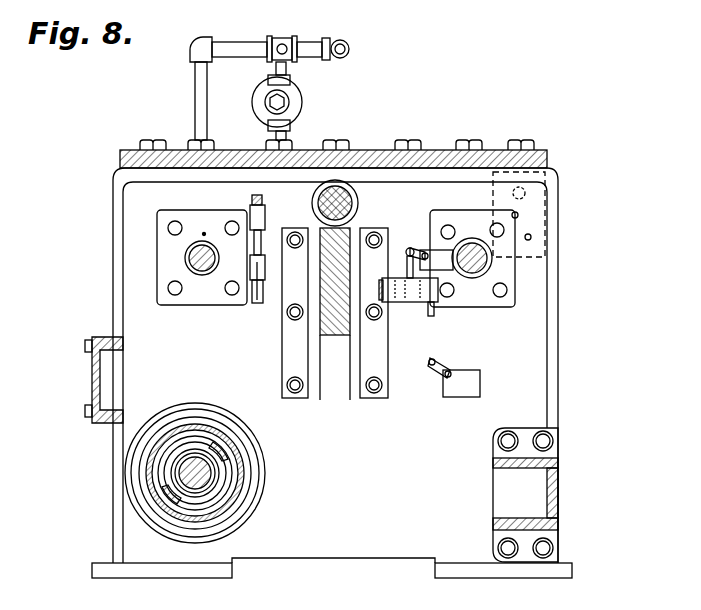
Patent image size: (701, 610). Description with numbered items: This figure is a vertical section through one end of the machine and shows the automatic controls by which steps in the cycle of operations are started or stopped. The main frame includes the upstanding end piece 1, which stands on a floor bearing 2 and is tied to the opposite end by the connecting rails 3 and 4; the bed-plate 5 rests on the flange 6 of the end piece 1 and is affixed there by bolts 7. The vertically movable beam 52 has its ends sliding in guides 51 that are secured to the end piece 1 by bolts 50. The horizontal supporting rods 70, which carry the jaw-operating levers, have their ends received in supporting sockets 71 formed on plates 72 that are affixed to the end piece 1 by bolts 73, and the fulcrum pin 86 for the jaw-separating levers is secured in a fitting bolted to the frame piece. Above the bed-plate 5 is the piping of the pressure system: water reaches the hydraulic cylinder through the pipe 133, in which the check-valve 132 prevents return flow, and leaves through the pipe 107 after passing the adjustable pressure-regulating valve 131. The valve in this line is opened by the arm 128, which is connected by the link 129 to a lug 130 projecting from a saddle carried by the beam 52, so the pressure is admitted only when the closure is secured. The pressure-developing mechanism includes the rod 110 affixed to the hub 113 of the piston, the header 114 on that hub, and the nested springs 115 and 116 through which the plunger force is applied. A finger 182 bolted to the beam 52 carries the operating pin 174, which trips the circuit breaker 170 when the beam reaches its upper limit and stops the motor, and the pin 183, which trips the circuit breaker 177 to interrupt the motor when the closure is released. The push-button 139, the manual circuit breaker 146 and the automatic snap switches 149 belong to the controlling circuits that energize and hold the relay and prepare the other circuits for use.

The end piece 1 is at (552, 348).
The floor bearing 2 is at (100, 566).
The connecting rail 3 is at (556, 505).
The connecting rail 4 is at (120, 340).
The bed-plate 5 is at (549, 160).
The flange 6 is at (195, 183).
The bolt 7 is at (516, 140).
The bolt 50 is at (295, 397).
The guide 51 is at (341, 400).
The beam 52 is at (338, 338).
The supporting rod 70 is at (189, 263).
The supporting socket 71 is at (204, 276).
The plate 72 is at (157, 228).
The bolt 73 is at (168, 290).
The fulcrum pin 86 is at (358, 202).
The pipe 107 is at (349, 49).
The rod 110 is at (213, 456).
The hub 113 is at (197, 462).
The header 114 is at (256, 481).
The spring 115 is at (242, 491).
The spring 116 is at (218, 503).
The arm 128 is at (209, 245).
The link 129 is at (230, 221).
The lug 130 is at (262, 201).
The pressure-regulating valve 131 is at (302, 100).
The check-valve 132 is at (283, 40).
The pipe 133 is at (196, 92).
The push-button 139 is at (520, 215).
The circuit breaker 146 is at (526, 190).
The snap switch 149 is at (533, 237).
The circuit breaker 170 is at (428, 252).
The operating pin 174 is at (409, 250).
The circuit breaker 177 is at (437, 392).
The finger 182 is at (392, 304).
The pin 183 is at (433, 318).